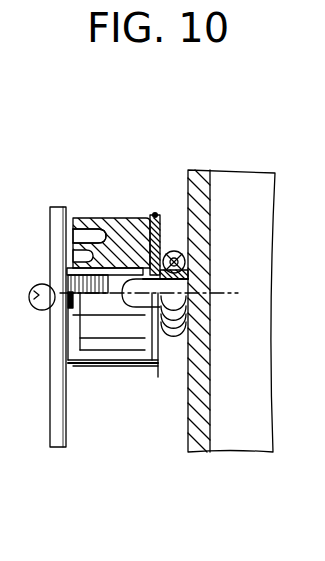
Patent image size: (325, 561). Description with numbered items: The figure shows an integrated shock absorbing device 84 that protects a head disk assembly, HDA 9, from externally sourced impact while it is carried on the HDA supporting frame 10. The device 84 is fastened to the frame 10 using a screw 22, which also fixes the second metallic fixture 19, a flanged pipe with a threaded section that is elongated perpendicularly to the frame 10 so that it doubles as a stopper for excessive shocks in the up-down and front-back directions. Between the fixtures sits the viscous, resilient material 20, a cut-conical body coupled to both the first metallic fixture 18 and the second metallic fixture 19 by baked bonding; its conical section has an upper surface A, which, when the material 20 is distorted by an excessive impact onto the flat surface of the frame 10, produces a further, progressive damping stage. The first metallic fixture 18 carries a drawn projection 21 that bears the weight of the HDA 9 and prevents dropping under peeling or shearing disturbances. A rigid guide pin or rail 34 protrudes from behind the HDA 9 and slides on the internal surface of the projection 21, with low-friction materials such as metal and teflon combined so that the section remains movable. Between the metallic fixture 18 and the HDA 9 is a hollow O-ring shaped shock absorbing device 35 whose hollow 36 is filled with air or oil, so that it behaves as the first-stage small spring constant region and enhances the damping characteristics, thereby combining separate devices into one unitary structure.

The HDA 9 is at (250, 435).
The HDA supporting frame 10 is at (56, 440).
The first metallic fixture 18 is at (155, 213).
The second metallic fixture 19 is at (92, 293).
The viscous, resilient material 20 is at (112, 230).
The drawn projection 21 is at (140, 247).
The screw 22 is at (38, 309).
The rigid guide pin or rail 34 is at (178, 283).
The hollow O-ring shaped shock absorbing device 35 is at (176, 251).
The hollow 36 is at (178, 264).
The shock absorbing device 84 is at (136, 368).
The upper surface A is at (77, 220).